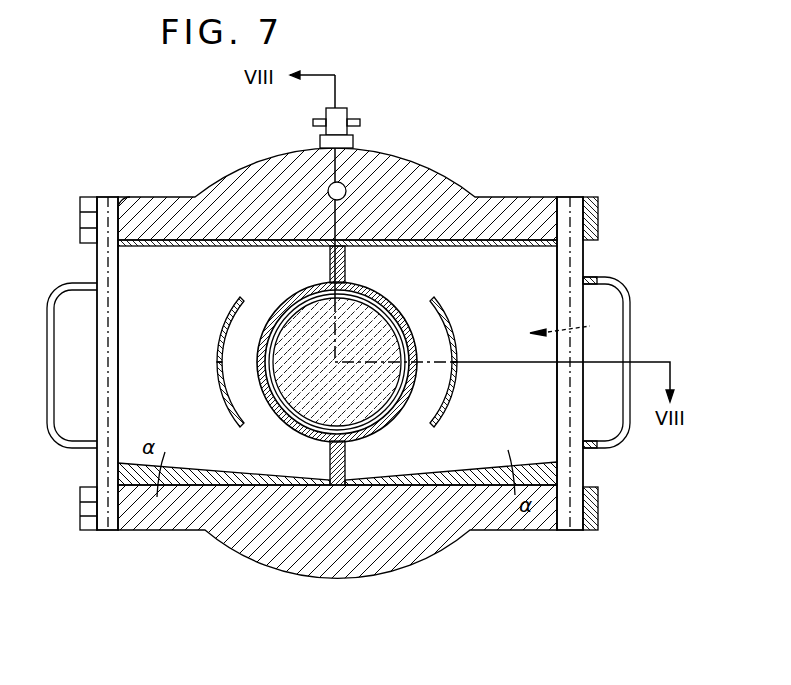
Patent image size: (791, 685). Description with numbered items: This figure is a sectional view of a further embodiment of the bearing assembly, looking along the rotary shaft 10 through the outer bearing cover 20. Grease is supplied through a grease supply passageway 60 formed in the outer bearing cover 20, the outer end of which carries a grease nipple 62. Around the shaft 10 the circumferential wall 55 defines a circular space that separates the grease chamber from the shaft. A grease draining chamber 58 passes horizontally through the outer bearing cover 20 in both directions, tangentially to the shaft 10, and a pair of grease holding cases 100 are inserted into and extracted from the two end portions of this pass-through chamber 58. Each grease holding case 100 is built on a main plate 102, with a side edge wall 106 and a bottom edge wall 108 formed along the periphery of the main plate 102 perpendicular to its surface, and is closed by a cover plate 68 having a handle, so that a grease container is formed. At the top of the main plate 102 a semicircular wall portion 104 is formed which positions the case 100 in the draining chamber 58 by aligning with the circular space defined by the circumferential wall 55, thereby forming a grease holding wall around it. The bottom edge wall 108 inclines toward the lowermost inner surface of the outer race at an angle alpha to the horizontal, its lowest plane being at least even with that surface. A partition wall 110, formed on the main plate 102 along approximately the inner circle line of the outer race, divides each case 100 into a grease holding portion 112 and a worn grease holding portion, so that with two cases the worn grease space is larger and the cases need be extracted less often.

The rotary shaft 10 is at (294, 312).
The outer bearing cover 20 is at (430, 182).
The circumferential wall 55 is at (306, 428).
The grease draining chamber 58 is at (212, 487).
The grease supply passageway 60 is at (328, 192).
The grease nipple 62 is at (354, 126).
The cover plate 68 is at (583, 264).
The grease holding case 100 is at (683, 331).
The main plate 102 is at (190, 290).
The semicircular wall portion 104 is at (384, 434).
The side edge wall 106 is at (510, 247).
The bottom edge wall 108 is at (467, 463).
The partition wall 110 is at (220, 326).
The grease holding portion 112 is at (219, 381).